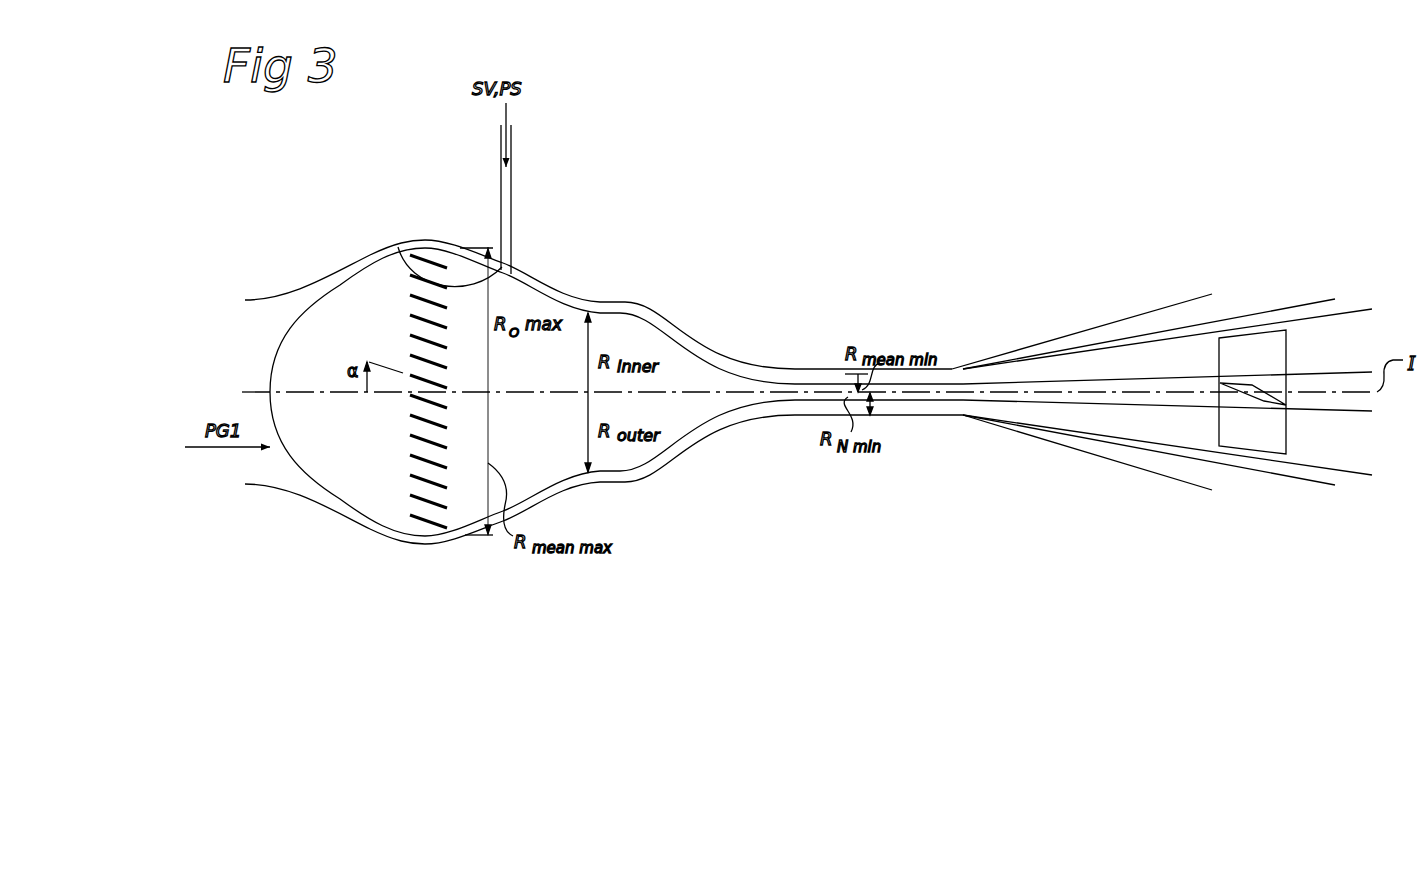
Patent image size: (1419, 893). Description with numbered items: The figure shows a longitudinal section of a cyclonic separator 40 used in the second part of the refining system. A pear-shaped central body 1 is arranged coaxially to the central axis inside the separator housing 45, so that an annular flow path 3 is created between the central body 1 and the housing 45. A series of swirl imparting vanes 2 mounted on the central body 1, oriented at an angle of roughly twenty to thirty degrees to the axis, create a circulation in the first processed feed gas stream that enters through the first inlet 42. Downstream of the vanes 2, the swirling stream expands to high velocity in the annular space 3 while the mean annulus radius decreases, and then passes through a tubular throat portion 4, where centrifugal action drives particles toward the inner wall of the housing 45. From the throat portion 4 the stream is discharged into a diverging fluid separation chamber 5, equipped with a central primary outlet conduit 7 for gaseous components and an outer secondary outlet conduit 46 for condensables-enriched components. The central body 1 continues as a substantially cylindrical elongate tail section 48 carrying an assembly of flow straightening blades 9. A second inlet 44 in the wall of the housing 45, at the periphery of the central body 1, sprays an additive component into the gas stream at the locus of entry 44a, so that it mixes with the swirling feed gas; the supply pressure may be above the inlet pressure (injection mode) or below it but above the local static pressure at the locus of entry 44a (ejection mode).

The pear-shaped central body 1 is at (355, 302).
The swirl imparting vanes 2 is at (412, 437).
The annular flow path 3 is at (522, 283).
The tubular throat portion 4 is at (775, 378).
The diverging fluid separation chamber 5 is at (962, 404).
The central primary outlet conduit 7 is at (1203, 430).
The flow straightening blades 9 is at (1258, 437).
The cyclonic separator 40 is at (764, 265).
The first inlet 42 is at (243, 372).
The second inlet 44 is at (507, 200).
The locus of entry 44a is at (428, 280).
The separator housing 45 is at (602, 298).
The outer secondary outlet conduit 46 is at (1135, 328).
The cylindrical elongate tail section 48 is at (1020, 386).